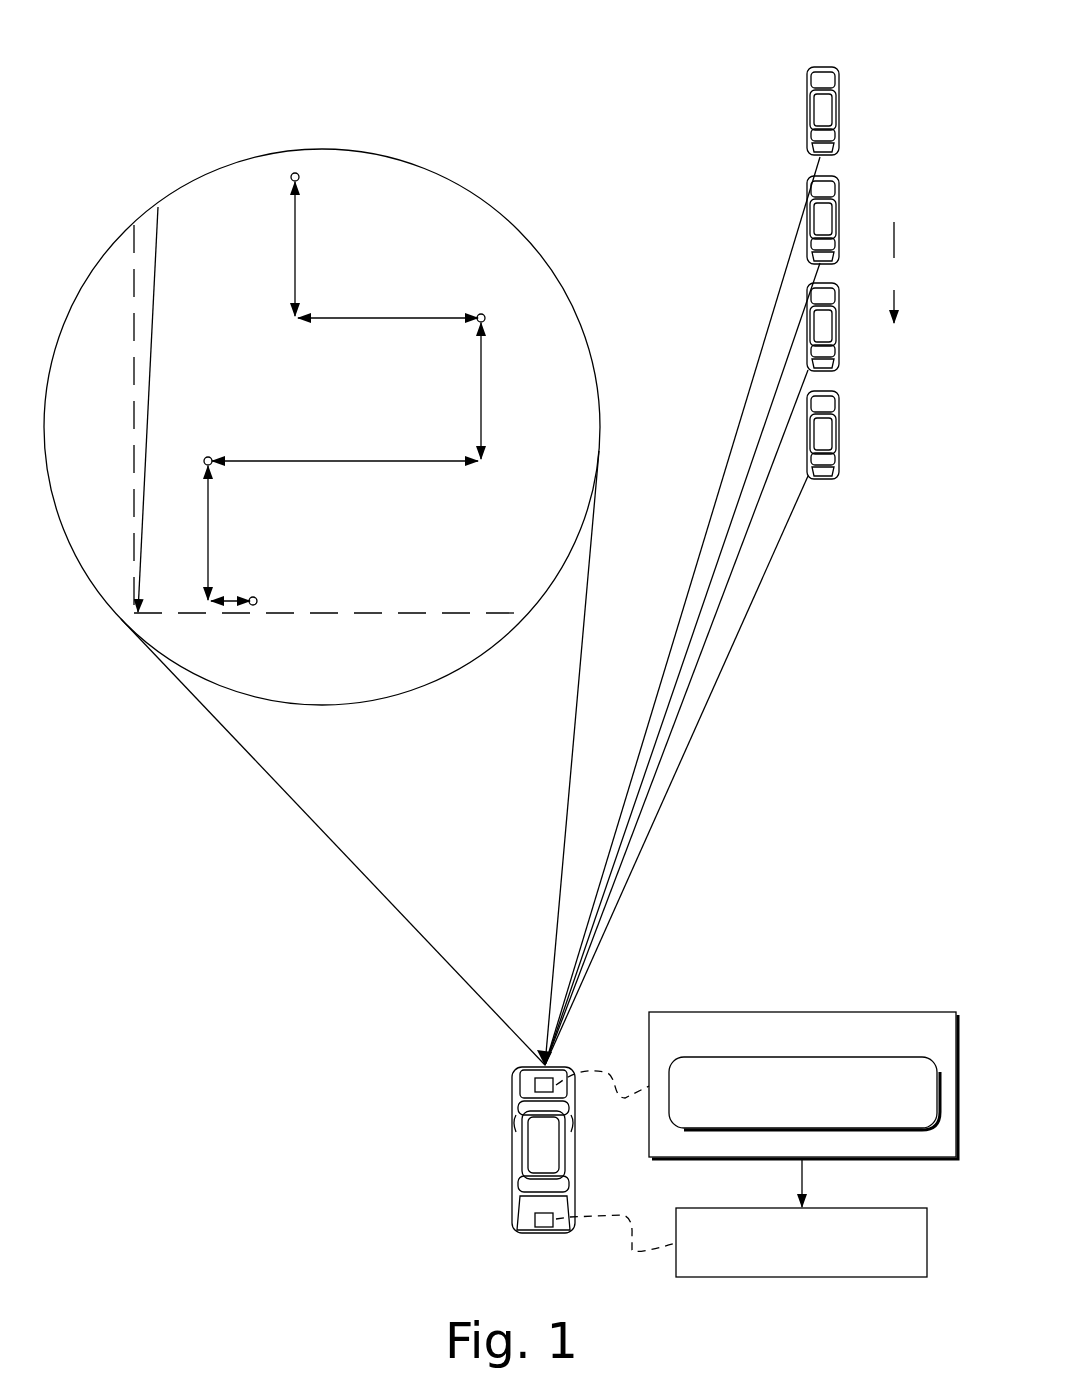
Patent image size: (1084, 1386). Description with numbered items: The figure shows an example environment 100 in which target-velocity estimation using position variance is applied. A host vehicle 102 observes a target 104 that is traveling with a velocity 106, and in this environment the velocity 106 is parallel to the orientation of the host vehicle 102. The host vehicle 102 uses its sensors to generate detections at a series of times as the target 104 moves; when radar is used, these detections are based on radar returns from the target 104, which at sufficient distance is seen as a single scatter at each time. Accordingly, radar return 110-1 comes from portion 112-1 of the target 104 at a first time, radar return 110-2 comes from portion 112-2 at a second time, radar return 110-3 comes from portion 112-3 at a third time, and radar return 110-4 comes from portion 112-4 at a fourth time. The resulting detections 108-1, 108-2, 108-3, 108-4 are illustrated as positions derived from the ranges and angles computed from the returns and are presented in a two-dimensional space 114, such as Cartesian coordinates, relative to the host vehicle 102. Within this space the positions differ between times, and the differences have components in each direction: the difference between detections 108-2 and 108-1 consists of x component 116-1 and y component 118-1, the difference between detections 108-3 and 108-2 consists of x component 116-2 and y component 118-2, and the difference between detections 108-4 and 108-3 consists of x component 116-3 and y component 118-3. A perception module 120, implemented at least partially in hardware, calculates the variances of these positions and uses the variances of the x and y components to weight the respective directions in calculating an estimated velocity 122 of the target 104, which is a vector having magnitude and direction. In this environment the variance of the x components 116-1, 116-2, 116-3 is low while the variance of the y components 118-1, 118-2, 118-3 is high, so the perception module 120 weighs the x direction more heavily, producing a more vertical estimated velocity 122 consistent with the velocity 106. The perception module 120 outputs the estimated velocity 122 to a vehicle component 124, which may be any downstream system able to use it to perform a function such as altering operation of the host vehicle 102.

The example environment 100 is at (850, 42).
The host vehicle 102 is at (518, 1072).
The target 104 is at (808, 83).
The velocity 106 is at (896, 272).
The detection 108-1 is at (298, 179).
The detection 108-2 is at (485, 323).
The detection 108-3 is at (211, 457).
The detection 108-4 is at (257, 598).
The radar return 110-1 is at (720, 490).
The radar return 110-2 is at (718, 577).
The radar return 110-3 is at (710, 630).
The radar return 110-4 is at (703, 717).
The portion 112-1 is at (818, 157).
The portion 112-2 is at (830, 263).
The portion 112-3 is at (817, 372).
The portion 112-4 is at (813, 478).
The two-dimensional space 114 is at (477, 197).
The x component 116-1 is at (296, 237).
The x component 116-2 is at (483, 388).
The x component 116-3 is at (211, 517).
The y component 118-1 is at (348, 320).
The y component 118-2 is at (295, 463).
The y component 118-3 is at (233, 606).
The perception module 120 is at (803, 1085).
The estimated velocity 122 is at (153, 325).
The vehicle component 124 is at (801, 1242).